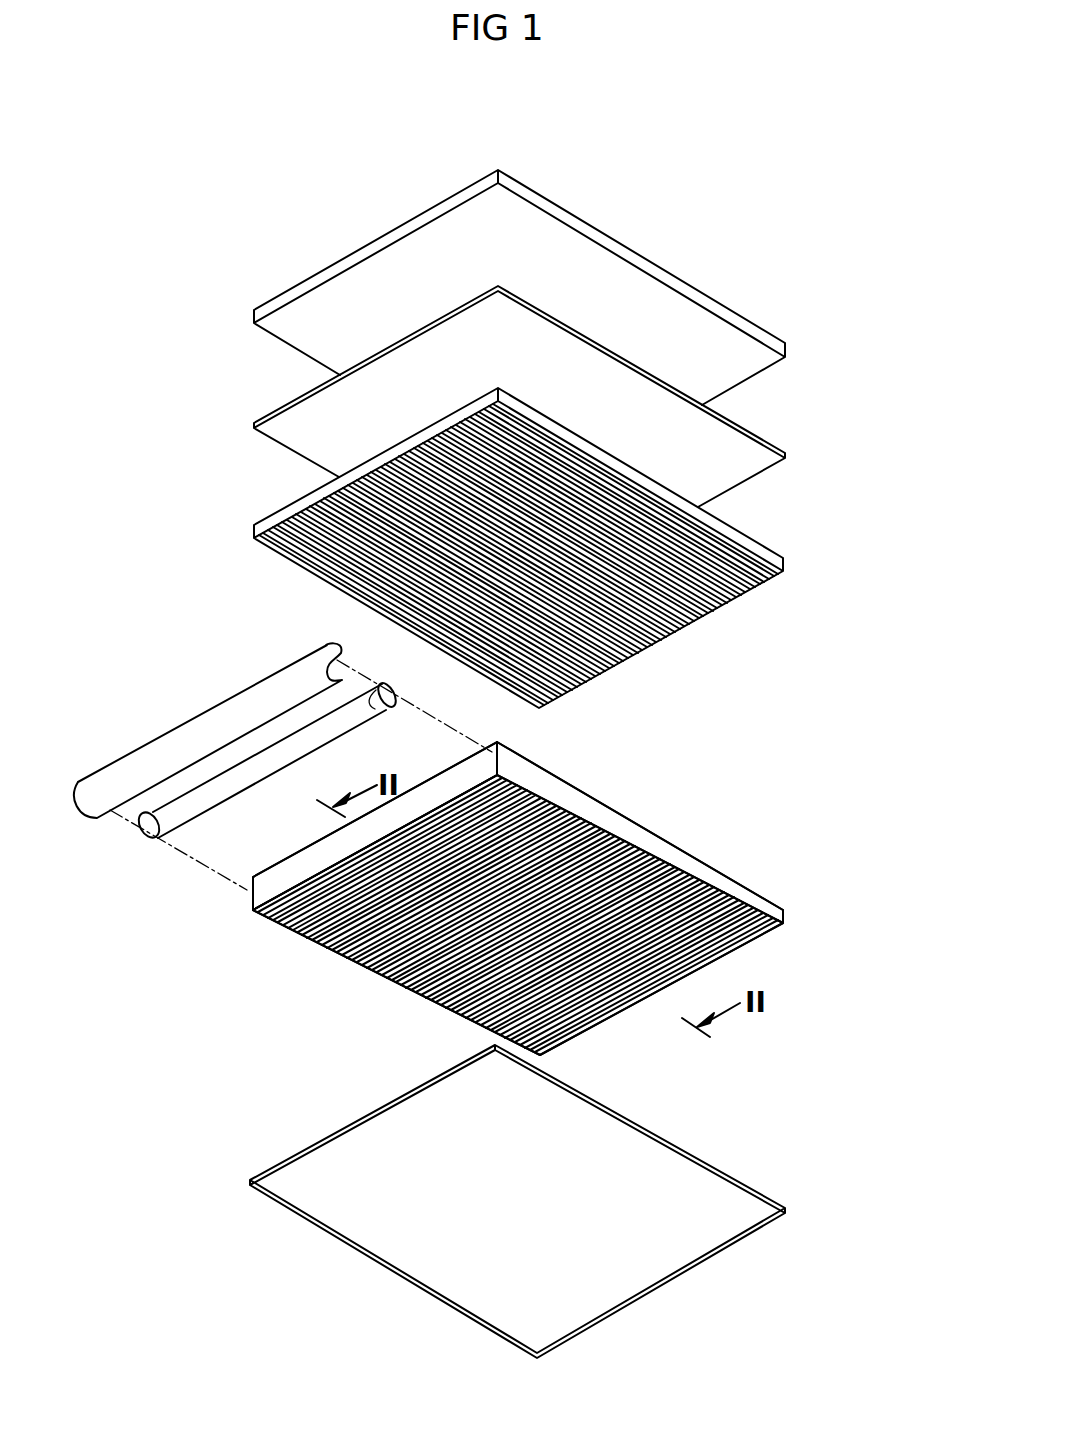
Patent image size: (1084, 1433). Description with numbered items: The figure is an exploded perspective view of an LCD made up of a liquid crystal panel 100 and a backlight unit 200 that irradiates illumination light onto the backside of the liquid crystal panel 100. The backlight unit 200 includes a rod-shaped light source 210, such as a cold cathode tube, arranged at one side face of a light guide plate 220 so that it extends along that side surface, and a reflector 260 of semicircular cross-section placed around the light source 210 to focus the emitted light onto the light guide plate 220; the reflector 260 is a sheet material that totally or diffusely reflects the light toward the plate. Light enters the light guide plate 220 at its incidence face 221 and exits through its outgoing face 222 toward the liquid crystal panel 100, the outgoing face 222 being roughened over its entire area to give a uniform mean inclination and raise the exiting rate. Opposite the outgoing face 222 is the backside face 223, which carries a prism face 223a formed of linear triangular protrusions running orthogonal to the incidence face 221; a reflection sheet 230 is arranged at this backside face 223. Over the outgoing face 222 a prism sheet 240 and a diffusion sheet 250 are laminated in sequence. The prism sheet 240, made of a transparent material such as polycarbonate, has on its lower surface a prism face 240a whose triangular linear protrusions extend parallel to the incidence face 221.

The liquid crystal panel 100 is at (747, 362).
The backlight unit 200 is at (808, 752).
The light source 210 is at (148, 832).
The light guide plate 220 is at (523, 895).
The incidence face 221 is at (270, 886).
The outgoing face 222 is at (677, 848).
The backside face 223 is at (561, 931).
The prism face 223a is at (717, 942).
The reflection sheet 230 is at (702, 1190).
The prism sheet 240 is at (561, 548).
The prism face 240a is at (688, 605).
The diffusion sheet 250 is at (747, 470).
The reflector 260 is at (227, 713).